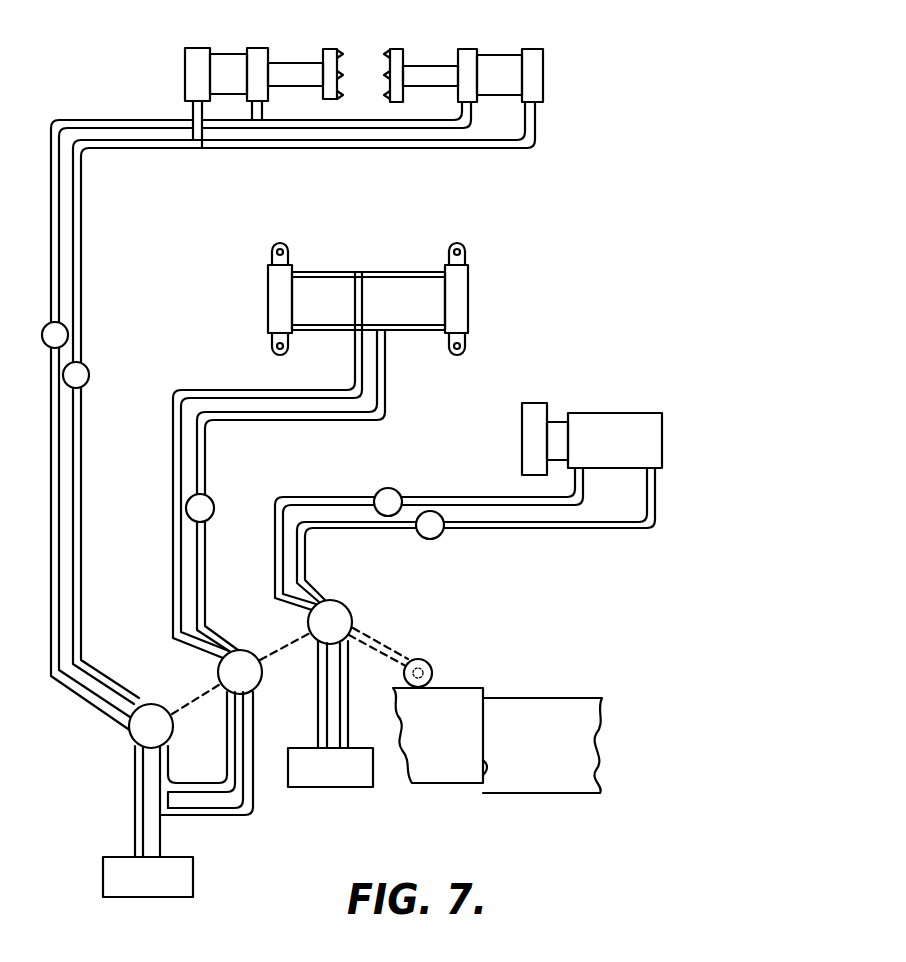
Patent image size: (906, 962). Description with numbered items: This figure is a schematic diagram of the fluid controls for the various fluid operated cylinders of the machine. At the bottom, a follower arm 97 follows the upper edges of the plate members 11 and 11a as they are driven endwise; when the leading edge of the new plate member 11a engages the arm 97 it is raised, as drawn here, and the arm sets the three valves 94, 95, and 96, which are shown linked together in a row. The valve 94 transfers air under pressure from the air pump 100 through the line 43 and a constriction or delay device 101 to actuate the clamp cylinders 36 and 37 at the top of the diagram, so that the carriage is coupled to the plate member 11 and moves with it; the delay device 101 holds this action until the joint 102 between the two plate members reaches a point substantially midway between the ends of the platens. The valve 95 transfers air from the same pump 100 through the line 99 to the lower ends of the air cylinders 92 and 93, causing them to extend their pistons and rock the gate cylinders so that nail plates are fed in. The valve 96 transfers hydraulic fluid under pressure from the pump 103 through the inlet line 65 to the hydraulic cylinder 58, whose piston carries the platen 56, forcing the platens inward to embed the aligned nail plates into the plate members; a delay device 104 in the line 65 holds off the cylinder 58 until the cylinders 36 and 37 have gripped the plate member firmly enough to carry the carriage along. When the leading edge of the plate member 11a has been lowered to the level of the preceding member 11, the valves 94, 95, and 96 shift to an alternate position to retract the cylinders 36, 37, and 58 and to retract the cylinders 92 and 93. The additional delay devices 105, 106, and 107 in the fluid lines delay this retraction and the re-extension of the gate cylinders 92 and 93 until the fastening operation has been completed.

The air operated cylinder 36 is at (226, 57).
The air operated cylinder 37 is at (510, 42).
The flexible inlet line 43 is at (193, 102).
The delay device 105 is at (42, 336).
The delay device 101 is at (82, 387).
The air cylinder 93 is at (268, 300).
The air cylinder 92 is at (470, 306).
The valve 94 is at (160, 706).
The line 99 is at (173, 640).
The delay device 107 is at (213, 512).
The second platen 56 is at (530, 402).
The hydraulic cylinder 58 is at (610, 418).
The inlet line 65 is at (656, 488).
The delay device 106 is at (397, 490).
The delay device 104 is at (428, 540).
The valve 95 is at (257, 652).
The valve 96 is at (342, 606).
The follower arm 97 is at (392, 653).
The air pump 100 is at (163, 902).
The pump 103 is at (357, 790).
The plate member 11a is at (460, 690).
The plate member 11 is at (540, 698).
The joint 102 is at (478, 785).